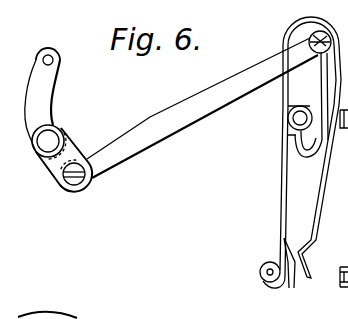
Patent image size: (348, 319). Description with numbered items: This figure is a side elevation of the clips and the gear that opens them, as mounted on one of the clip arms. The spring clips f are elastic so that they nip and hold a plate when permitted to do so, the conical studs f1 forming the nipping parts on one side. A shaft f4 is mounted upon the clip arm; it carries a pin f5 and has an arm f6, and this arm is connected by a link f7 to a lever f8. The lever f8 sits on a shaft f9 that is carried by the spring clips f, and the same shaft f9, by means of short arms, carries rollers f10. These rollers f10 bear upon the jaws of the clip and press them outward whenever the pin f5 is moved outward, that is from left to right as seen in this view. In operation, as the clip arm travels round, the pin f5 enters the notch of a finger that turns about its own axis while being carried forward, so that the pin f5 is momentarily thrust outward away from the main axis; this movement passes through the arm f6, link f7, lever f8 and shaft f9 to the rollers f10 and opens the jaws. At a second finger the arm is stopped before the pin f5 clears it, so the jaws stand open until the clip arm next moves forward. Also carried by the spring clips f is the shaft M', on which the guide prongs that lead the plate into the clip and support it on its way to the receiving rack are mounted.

The clip f is at (299, 152).
The conical stud f1 is at (295, 274).
The shaft f4 is at (52, 133).
The pin f5 is at (54, 61).
The arm f6 is at (46, 164).
The link f7 is at (202, 108).
The lever f8 is at (314, 87).
The shaft f9 is at (290, 122).
The roller f10 is at (306, 160).
The shaft M' is at (260, 286).